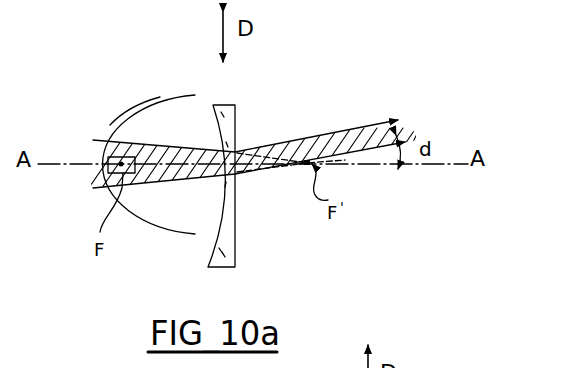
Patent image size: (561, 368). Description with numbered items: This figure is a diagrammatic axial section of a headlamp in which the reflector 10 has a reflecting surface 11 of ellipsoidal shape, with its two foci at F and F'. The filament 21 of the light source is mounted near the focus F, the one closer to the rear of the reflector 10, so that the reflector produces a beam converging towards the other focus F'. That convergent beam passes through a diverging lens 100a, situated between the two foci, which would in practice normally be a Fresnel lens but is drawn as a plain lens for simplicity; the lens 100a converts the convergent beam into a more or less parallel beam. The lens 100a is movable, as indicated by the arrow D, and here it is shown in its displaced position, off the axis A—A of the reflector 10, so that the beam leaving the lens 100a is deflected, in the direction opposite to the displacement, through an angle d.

The reflector 10 is at (146, 100).
The reflecting surface 11 is at (161, 100).
The filament 21 is at (120, 155).
The diverging lens 100a is at (235, 113).